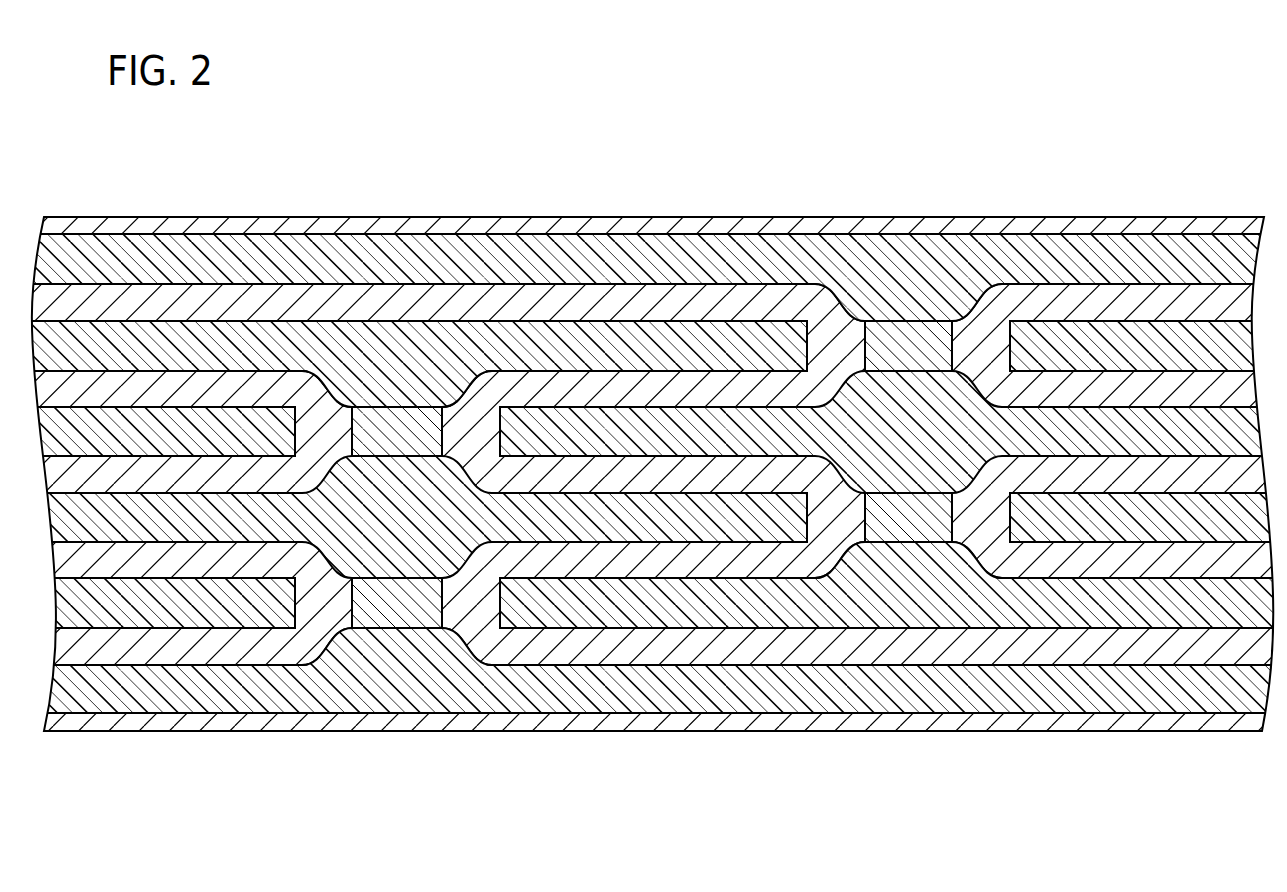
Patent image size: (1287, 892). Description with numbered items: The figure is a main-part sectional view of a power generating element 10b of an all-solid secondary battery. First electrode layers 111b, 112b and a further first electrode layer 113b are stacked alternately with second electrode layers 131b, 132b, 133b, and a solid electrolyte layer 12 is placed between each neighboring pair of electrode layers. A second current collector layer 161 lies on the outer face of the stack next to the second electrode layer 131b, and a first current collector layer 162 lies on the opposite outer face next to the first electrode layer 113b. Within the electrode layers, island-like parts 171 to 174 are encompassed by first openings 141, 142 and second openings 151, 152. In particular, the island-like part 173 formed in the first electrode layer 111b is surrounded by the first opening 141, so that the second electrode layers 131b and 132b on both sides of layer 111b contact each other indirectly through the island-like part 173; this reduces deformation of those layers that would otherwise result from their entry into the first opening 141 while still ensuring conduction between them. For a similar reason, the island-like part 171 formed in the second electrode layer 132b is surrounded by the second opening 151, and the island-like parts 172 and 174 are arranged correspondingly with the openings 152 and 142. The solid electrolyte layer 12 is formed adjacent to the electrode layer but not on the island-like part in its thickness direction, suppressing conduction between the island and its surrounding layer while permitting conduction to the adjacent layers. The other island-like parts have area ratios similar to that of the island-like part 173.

The power generating element 10b is at (1183, 130).
The solid electrolyte layer 12 is at (1047, 557).
The first electrode layer 111b is at (185, 350).
The first electrode layer 112b is at (262, 530).
The third conductor layer 113b is at (187, 687).
The second electrode layer 131b is at (1162, 275).
The second electrode layer 132b is at (903, 407).
The second electrode layer 133b is at (1128, 608).
The first opening 141 is at (870, 318).
The first opening 142 is at (870, 545).
The second opening 151 is at (358, 397).
The second opening 152 is at (358, 612).
The second current collector layer 161 is at (572, 228).
The first current collector layer 162 is at (522, 722).
The island-like part 171 is at (386, 420).
The island-like part 172 is at (416, 603).
The island-like part 173 is at (934, 343).
The island-like part 174 is at (930, 527).